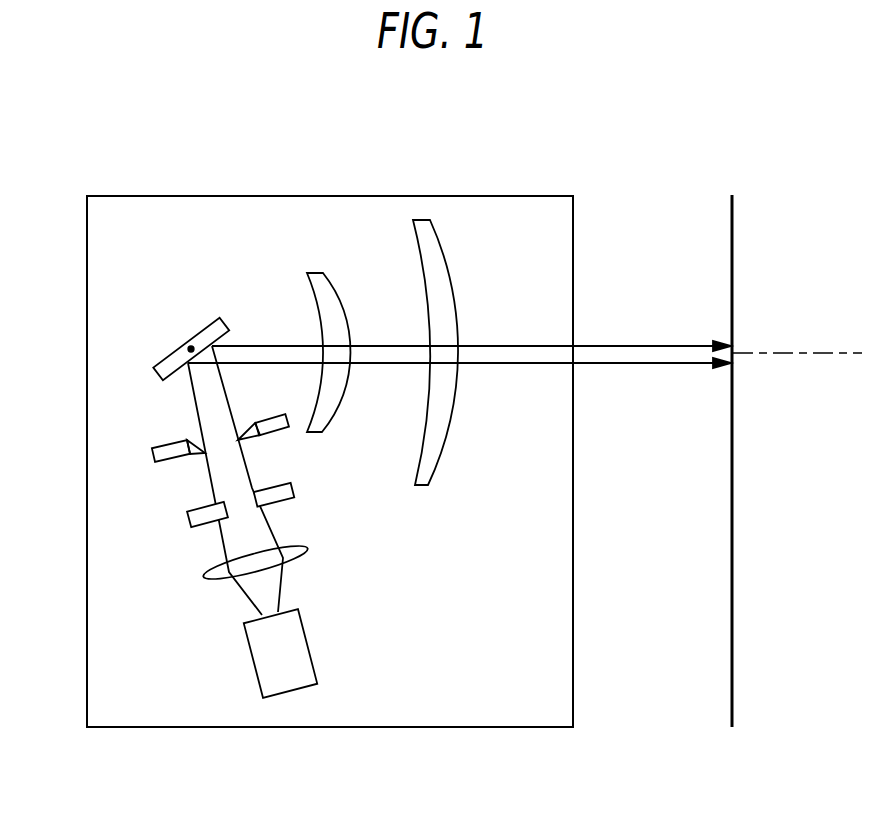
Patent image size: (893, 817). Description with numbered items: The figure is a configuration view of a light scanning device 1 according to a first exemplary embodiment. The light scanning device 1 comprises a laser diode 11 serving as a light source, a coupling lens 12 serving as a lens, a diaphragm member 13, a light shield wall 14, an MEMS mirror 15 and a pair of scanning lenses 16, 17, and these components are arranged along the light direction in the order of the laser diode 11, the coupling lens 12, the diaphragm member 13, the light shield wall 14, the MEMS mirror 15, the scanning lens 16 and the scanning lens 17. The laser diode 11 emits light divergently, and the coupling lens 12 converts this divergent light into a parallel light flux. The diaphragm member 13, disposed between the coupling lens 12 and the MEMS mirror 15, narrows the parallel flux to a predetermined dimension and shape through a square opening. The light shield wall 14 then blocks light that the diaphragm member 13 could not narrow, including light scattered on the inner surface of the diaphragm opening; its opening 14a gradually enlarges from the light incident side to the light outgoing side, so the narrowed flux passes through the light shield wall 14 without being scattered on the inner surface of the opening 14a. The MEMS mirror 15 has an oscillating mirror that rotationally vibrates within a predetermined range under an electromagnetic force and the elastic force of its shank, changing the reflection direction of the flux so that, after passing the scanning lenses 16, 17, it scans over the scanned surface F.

The light scanning device 1 is at (531, 169).
The laser diode 11 is at (292, 692).
The coupling lens 12 is at (202, 580).
The diaphragm member 13 is at (187, 522).
The light shield wall 14 is at (157, 434).
The opening 14a is at (197, 443).
The MEMS mirror 15 is at (167, 355).
The scanning lens 16 is at (313, 273).
The scanning lens 17 is at (420, 220).
The scanned surface F is at (732, 652).